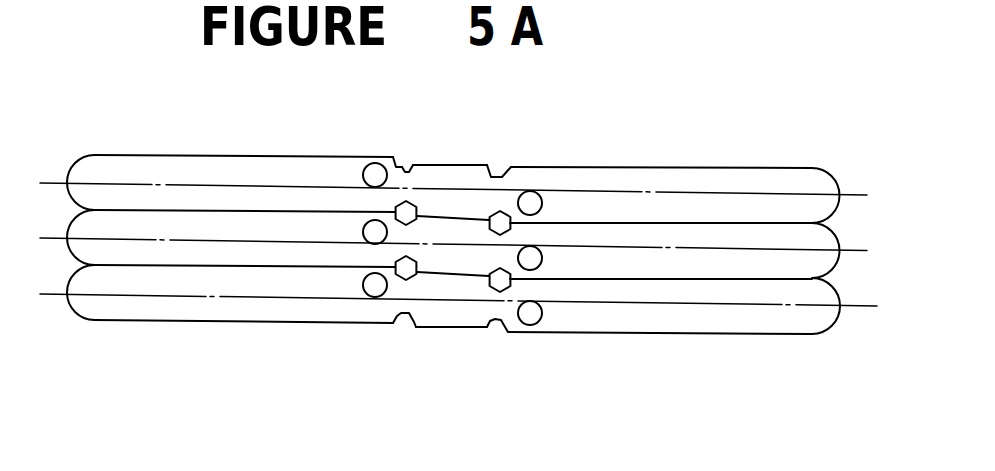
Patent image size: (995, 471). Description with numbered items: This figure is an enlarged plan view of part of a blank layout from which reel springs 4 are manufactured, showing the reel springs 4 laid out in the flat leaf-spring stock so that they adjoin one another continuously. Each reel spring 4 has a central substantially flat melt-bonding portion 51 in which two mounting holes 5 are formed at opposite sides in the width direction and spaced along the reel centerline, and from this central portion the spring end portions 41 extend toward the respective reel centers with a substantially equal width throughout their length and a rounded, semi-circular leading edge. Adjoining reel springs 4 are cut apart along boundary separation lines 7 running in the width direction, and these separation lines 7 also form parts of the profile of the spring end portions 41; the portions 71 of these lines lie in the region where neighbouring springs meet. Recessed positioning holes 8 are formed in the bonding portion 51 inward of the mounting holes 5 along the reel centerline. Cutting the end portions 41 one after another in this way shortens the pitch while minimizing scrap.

The reel spring 4 is at (458, 241).
The spring end portion 41 is at (155, 177).
The mounting hole 5 is at (364, 171).
The melt-bonding portion 51 is at (475, 182).
The boundary separation line 7 is at (263, 210).
The offset joint portion 71 is at (457, 216).
The positioning hole 8 is at (404, 165).